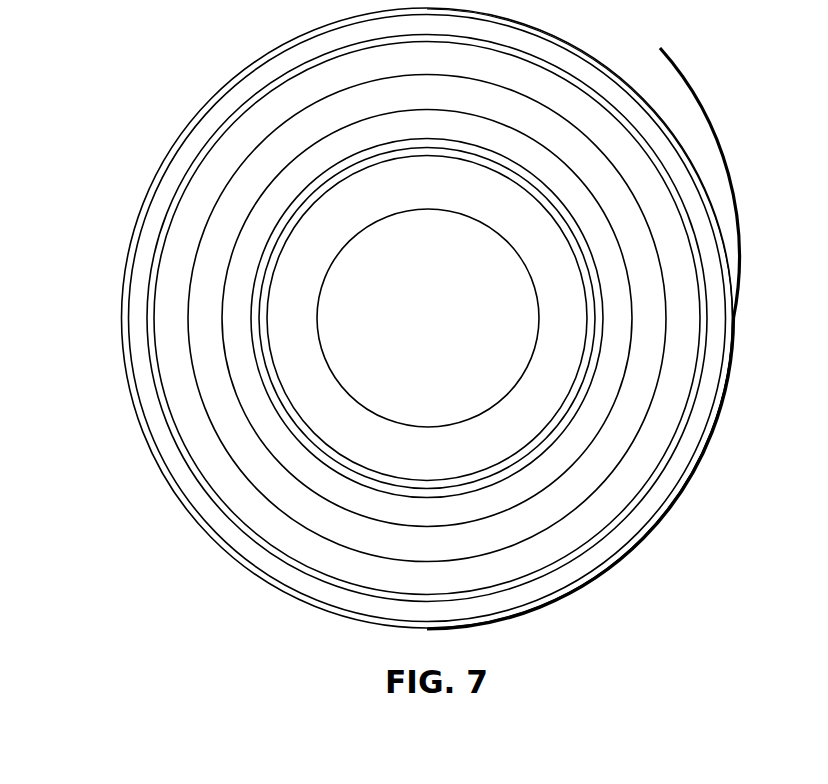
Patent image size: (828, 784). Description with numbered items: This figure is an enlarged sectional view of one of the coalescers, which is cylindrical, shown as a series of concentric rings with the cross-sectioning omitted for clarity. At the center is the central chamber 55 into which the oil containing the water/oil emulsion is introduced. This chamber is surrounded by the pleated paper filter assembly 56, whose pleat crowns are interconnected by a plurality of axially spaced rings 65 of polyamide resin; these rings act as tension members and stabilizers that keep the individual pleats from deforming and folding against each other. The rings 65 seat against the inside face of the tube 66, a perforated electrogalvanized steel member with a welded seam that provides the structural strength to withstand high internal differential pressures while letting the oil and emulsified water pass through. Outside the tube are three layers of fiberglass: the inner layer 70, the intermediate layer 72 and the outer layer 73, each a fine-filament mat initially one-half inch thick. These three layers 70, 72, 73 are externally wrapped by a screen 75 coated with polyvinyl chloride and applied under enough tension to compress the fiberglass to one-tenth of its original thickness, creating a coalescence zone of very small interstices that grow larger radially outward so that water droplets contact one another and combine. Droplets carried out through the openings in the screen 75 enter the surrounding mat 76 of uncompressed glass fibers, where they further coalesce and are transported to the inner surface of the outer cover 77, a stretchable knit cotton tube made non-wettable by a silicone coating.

The central chamber 55 is at (438, 346).
The pleated paper filter assembly 56 is at (308, 347).
The rings 65 is at (264, 297).
The tube 66 is at (307, 443).
The inner layer 70 is at (198, 322).
The intermediate layer 72 is at (227, 332).
The outer layer 73 is at (165, 318).
The screen 75 is at (160, 245).
The mat 76 is at (155, 217).
The outer cover 77 is at (152, 190).